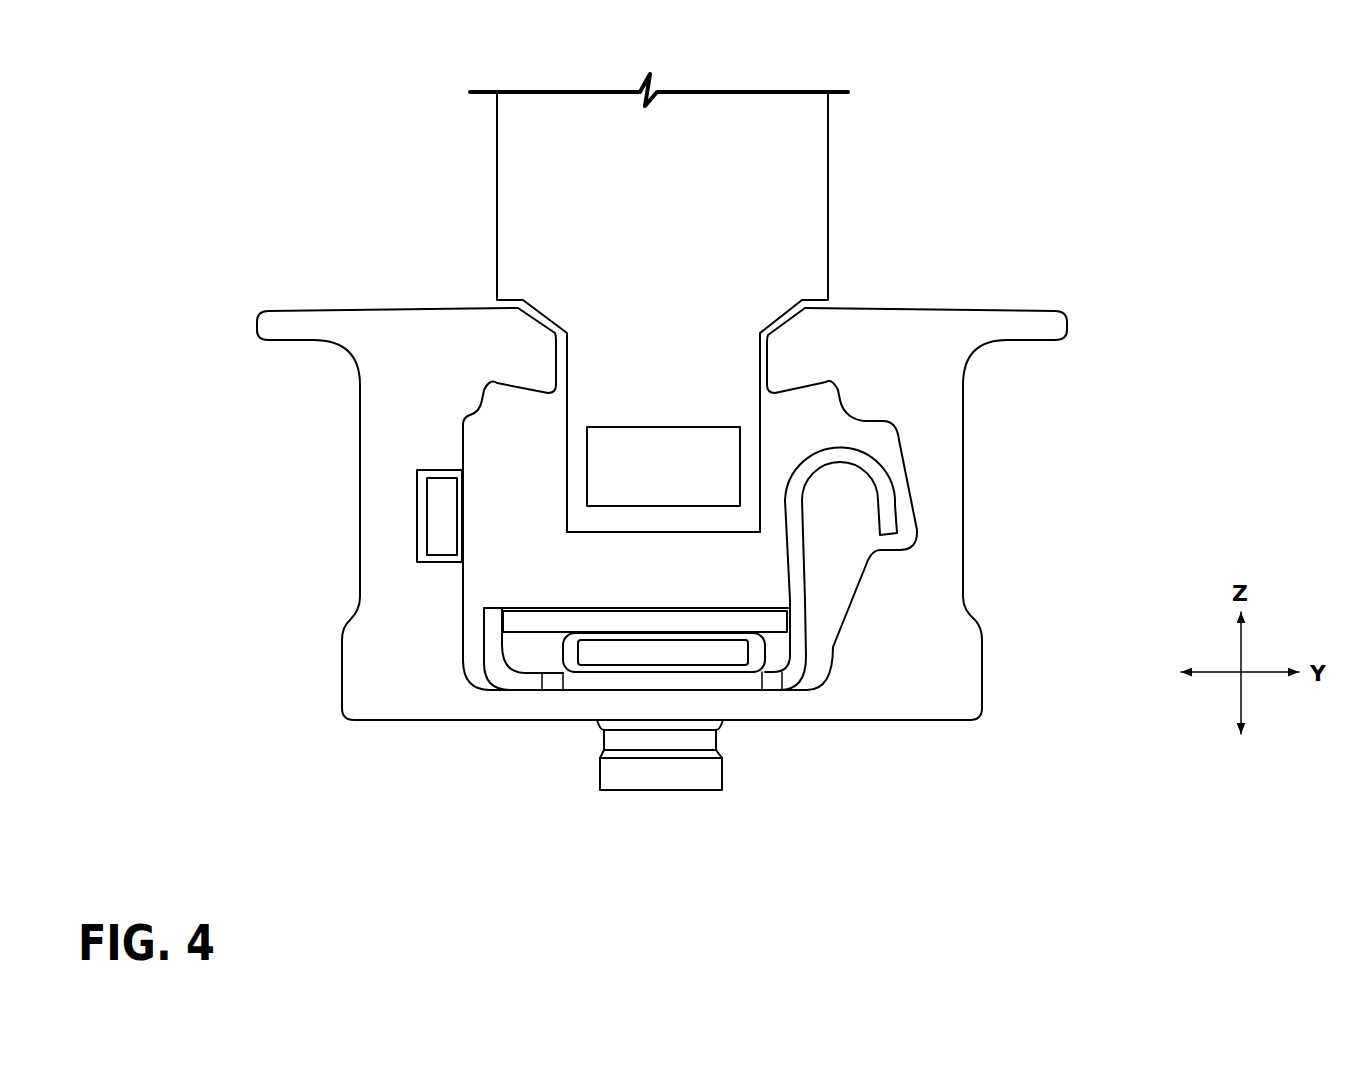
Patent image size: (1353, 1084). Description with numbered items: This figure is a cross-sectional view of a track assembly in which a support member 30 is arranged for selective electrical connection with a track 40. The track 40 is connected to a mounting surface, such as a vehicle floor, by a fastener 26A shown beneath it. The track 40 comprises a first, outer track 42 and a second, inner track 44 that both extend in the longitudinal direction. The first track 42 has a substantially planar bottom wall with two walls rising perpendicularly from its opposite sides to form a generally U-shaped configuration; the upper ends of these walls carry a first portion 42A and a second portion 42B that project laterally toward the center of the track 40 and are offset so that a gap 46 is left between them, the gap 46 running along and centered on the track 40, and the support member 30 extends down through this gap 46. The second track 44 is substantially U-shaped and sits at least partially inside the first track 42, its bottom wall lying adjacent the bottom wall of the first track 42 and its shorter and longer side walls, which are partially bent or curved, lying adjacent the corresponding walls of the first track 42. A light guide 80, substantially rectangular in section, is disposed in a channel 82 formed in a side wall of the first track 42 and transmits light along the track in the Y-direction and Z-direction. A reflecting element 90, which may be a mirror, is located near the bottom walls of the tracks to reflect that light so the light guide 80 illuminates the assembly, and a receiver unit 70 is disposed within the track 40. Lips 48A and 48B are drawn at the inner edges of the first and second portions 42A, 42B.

The support member 30 is at (808, 137).
The track 40 is at (295, 238).
The first track 42 is at (672, 553).
The first portion 42A is at (406, 310).
The second portion 42B is at (917, 297).
The gap 46 is at (667, 400).
The left lip 48A is at (540, 323).
The right lip 48B is at (777, 320).
The receiver unit 70 is at (637, 487).
The light guide 80 is at (371, 480).
The channel 82 is at (427, 473).
The reflecting element 90 is at (545, 615).
The second track 44 is at (726, 663).
The fastener 26A is at (642, 650).